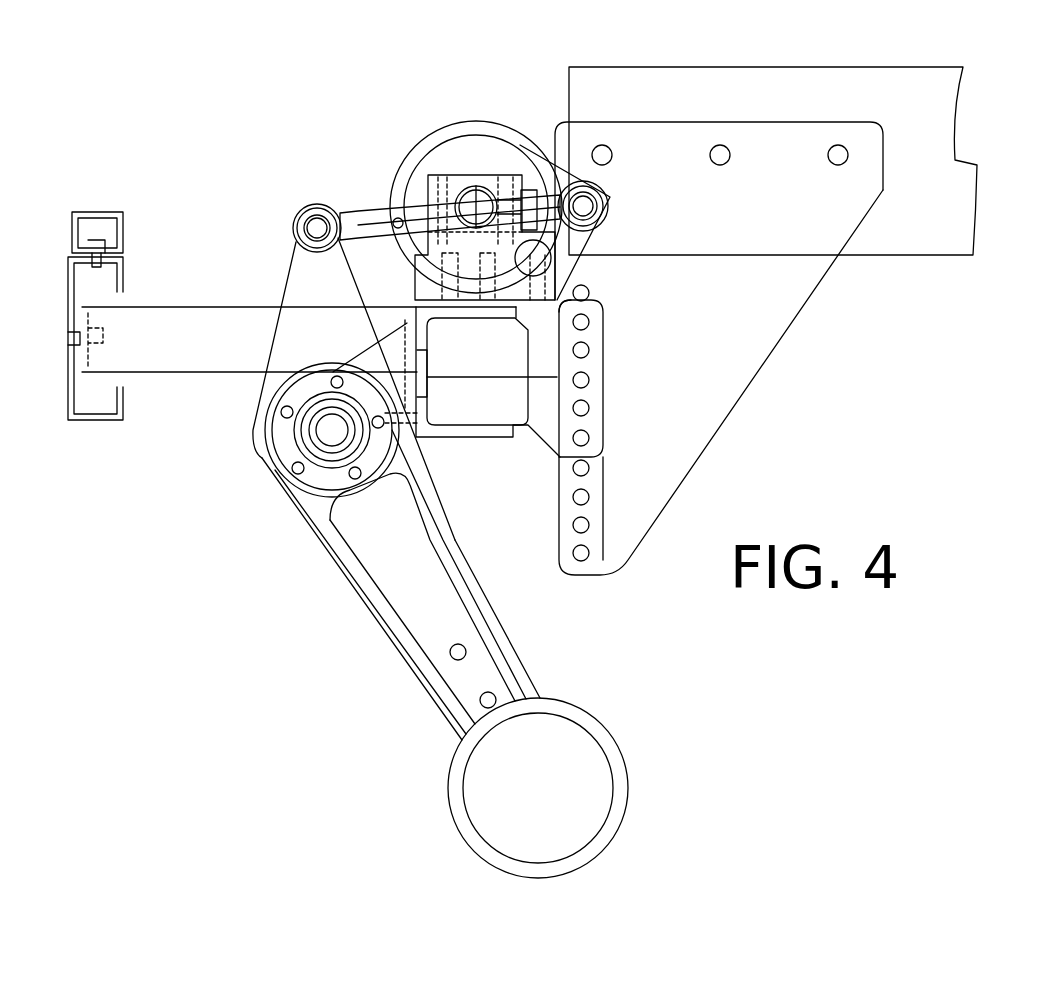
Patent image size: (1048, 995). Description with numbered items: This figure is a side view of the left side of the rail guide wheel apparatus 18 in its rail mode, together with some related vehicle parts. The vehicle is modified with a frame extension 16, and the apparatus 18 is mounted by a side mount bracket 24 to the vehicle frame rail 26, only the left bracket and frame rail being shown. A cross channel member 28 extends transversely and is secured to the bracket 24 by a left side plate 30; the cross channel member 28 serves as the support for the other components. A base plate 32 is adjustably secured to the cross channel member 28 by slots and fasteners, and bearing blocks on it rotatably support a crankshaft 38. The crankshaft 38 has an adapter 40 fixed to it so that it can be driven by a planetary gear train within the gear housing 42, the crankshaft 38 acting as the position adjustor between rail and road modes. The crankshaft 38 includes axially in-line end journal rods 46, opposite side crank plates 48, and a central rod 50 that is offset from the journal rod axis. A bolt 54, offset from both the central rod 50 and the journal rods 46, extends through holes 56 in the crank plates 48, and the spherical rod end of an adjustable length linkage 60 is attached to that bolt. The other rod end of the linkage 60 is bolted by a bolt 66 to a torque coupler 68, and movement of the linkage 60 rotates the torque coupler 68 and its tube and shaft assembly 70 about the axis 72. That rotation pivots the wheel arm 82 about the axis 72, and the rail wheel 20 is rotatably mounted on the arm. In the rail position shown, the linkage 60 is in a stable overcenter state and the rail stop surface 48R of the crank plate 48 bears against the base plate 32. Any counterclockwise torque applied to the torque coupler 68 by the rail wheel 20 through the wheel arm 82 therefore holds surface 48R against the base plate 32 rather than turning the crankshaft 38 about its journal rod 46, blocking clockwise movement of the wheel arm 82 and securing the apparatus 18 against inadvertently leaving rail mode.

The frame extension 16 is at (175, 307).
The rail guide wheel apparatus 18 is at (421, 494).
The rail wheel 20 is at (630, 797).
The side mount bracket 24 is at (722, 430).
The vehicle frame rail 26 is at (960, 162).
The cross channel member 28 is at (467, 437).
The left side plate 30 is at (582, 478).
The base plate 32 is at (578, 352).
The crankshaft 38 is at (573, 262).
The adapter 40 is at (456, 125).
The gear housing 42 is at (428, 150).
The journal rod 46 is at (476, 186).
The crank plate 48 is at (520, 155).
The rail stop surface 48R is at (522, 185).
The crankshaft central rod 50 is at (577, 312).
The bolt 54 is at (603, 178).
The hole 56 is at (610, 194).
The adjustable length linkage 60 is at (383, 210).
The bolt 66 is at (300, 214).
The torque coupler 68 is at (282, 284).
The tube and shaft assembly 70 is at (283, 473).
The axis 72 is at (318, 436).
The wheel arm 82 is at (523, 663).